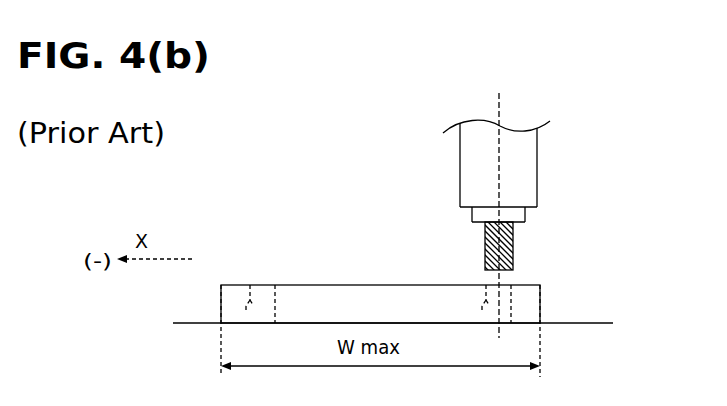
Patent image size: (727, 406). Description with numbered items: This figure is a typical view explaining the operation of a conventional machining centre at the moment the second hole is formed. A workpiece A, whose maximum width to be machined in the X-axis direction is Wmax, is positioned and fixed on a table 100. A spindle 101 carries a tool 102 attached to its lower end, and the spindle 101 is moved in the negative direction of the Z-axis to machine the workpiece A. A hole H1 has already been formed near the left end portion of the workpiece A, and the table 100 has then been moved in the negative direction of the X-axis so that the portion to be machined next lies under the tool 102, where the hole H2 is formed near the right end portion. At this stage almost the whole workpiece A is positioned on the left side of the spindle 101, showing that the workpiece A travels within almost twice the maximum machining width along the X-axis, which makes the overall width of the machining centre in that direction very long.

The table 100 is at (568, 323).
The spindle 101 is at (470, 173).
The tool 102 is at (513, 248).
The workpiece A is at (326, 285).
The hole H1 is at (257, 284).
The hole H2 is at (492, 283).